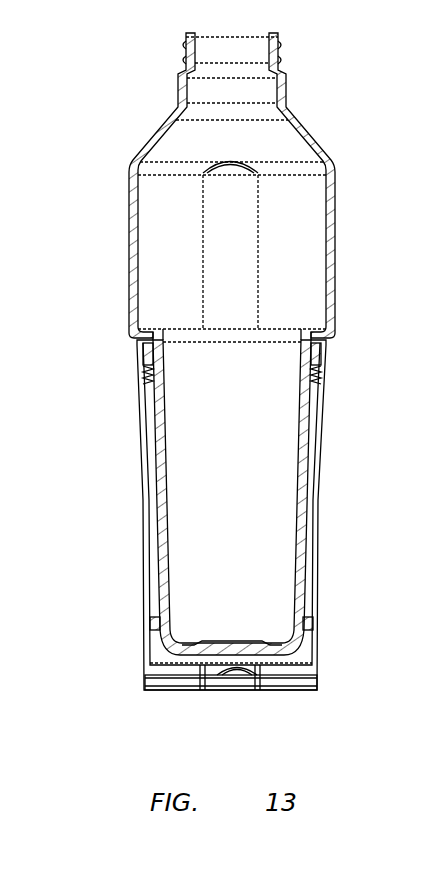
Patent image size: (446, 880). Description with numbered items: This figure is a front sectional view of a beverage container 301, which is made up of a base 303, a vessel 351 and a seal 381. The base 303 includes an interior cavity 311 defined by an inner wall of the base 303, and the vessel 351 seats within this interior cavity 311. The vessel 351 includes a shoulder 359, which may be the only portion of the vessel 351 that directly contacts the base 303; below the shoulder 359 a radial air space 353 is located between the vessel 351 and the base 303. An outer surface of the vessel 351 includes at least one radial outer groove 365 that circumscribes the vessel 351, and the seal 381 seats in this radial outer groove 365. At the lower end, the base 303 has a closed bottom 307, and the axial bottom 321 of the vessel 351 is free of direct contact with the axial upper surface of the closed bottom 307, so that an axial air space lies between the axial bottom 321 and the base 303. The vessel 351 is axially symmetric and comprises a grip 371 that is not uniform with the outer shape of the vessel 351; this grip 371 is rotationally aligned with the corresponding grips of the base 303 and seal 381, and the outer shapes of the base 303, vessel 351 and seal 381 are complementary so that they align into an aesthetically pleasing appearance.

The beverage container 301 is at (133, 43).
The vessel 351 is at (130, 222).
The grip 371 is at (235, 212).
The shoulder 359 is at (152, 328).
The seal 381 is at (138, 357).
The interior cavity 311 is at (310, 462).
The radial air space 353 is at (157, 485).
The base 303 is at (142, 555).
The radial outer groove 365 is at (155, 624).
The closed bottom 307 is at (170, 683).
The axial bottom 321 is at (262, 683).